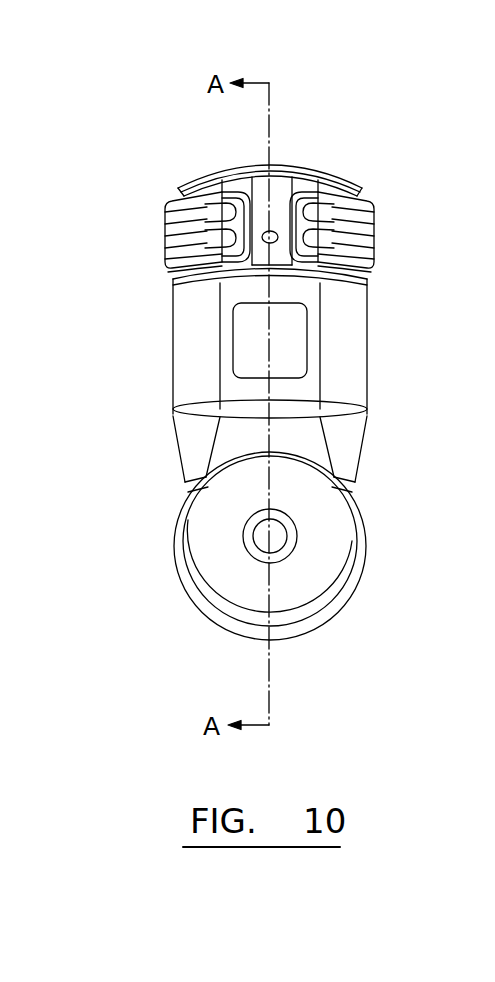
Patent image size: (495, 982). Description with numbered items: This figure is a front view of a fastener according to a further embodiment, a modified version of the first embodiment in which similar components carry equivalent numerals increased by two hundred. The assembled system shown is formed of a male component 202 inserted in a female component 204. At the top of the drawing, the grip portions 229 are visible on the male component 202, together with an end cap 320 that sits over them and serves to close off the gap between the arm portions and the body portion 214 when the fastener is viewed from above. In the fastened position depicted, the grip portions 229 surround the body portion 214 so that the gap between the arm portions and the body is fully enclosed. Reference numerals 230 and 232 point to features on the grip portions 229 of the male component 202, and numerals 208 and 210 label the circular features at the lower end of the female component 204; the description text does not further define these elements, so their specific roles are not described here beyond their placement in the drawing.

The male component 202 is at (148, 178).
The female component 204 is at (155, 416).
The pivot hub 208 is at (278, 540).
The wheel 210 is at (313, 585).
The body portion 214 is at (250, 194).
The grip portions 229 is at (387, 172).
The groove 230 is at (373, 247).
The rib 232 is at (373, 233).
The end cap 320 is at (305, 168).